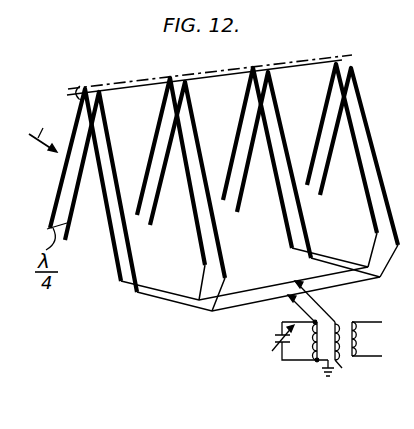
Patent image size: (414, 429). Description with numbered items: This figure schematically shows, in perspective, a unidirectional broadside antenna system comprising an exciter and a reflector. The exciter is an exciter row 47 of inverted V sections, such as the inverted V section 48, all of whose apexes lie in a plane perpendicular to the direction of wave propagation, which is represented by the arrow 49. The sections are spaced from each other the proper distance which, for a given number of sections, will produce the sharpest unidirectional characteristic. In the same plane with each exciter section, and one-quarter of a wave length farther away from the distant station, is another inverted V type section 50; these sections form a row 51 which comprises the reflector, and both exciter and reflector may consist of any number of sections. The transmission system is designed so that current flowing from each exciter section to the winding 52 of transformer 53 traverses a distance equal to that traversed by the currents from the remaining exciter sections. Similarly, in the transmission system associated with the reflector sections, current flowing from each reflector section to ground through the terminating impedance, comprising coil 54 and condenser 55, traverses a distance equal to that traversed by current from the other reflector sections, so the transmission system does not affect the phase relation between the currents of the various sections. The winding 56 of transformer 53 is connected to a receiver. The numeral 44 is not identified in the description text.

The V-shaped antenna element 44 is at (88, 167).
The exciter row 47 is at (303, 62).
The inverted V section 48 is at (96, 93).
The arrow 49 is at (42, 139).
The inverted V type section 50 is at (123, 182).
The row 51 is at (324, 64).
The winding 52 is at (343, 367).
The transformer 53 is at (342, 324).
The coil 54 is at (313, 342).
The condenser 55 is at (275, 342).
The winding 56 is at (360, 342).